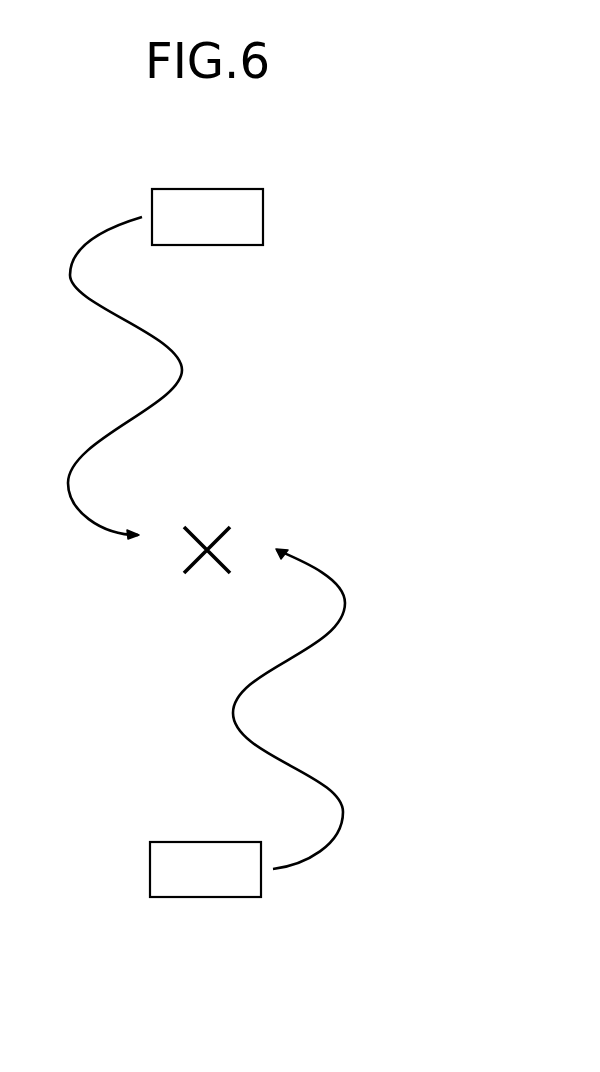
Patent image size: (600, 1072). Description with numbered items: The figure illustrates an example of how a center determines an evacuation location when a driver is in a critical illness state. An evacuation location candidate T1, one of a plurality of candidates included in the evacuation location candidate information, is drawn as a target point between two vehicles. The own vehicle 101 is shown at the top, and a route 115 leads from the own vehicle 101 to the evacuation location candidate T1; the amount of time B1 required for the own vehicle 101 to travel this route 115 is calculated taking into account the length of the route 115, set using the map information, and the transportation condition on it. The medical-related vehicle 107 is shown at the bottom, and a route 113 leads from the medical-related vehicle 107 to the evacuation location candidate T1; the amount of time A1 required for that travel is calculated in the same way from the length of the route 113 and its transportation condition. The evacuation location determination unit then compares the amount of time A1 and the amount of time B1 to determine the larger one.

The own vehicle 101 is at (208, 203).
The medical-related vehicle 107 is at (207, 857).
The route 113 is at (262, 750).
The route 115 is at (148, 413).
The amount of time A1 is at (294, 684).
The amount of time B1 is at (202, 355).
The evacuation location candidate T1 is at (207, 548).